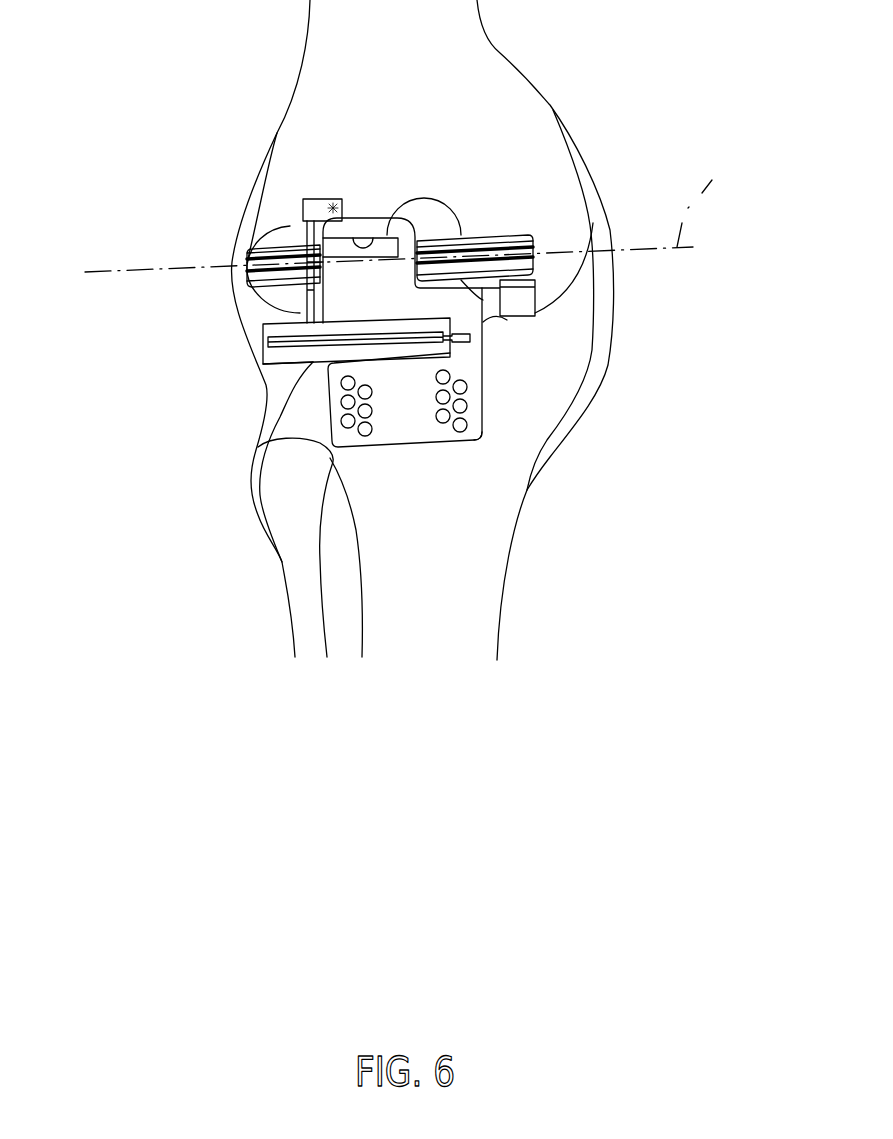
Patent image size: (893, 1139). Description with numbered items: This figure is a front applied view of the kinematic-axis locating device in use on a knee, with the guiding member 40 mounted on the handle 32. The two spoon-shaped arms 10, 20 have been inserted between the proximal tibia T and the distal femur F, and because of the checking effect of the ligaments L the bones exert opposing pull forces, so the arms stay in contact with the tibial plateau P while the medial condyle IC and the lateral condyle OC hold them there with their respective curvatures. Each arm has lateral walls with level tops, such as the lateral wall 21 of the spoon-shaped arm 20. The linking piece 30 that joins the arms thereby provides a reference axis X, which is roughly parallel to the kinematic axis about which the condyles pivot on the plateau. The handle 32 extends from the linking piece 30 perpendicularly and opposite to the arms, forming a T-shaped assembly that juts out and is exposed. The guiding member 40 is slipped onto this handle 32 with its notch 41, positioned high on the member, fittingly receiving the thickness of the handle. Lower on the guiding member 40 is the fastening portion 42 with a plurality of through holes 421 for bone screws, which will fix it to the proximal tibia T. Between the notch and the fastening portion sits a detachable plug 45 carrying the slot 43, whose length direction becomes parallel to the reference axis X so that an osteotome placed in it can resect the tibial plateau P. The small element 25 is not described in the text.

The spoon-shaped arm 10 is at (525, 303).
The spoon-shaped arm 20 is at (310, 375).
The lateral wall 21 is at (300, 313).
The locking block 25 is at (323, 203).
The linking piece 30 is at (275, 252).
The handle 32 is at (397, 225).
The guiding member 40 is at (491, 287).
The notch 41 is at (374, 245).
The fastening portion 42 is at (460, 454).
The through holes 421 is at (462, 427).
The slot 43 is at (270, 332).
The plug 45 is at (270, 357).
The distal femur F is at (477, 72).
The proximal tibia T is at (500, 408).
The tibial plateau P is at (503, 320).
The ligaments L is at (602, 343).
The medial condyle IC is at (280, 207).
The lateral condyle OC is at (563, 185).
The reference axis X is at (726, 161).